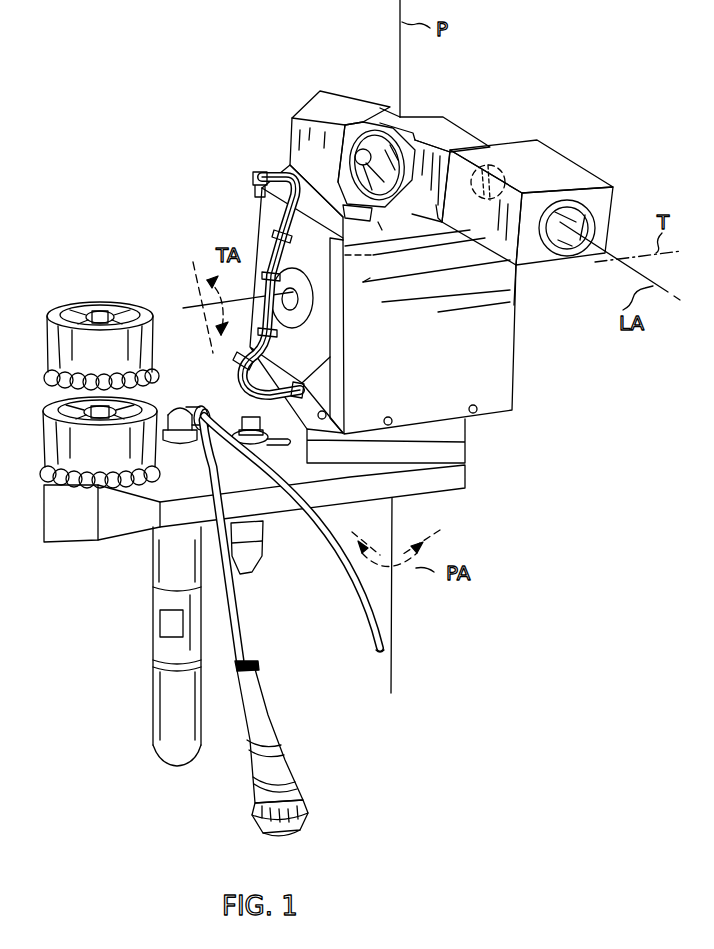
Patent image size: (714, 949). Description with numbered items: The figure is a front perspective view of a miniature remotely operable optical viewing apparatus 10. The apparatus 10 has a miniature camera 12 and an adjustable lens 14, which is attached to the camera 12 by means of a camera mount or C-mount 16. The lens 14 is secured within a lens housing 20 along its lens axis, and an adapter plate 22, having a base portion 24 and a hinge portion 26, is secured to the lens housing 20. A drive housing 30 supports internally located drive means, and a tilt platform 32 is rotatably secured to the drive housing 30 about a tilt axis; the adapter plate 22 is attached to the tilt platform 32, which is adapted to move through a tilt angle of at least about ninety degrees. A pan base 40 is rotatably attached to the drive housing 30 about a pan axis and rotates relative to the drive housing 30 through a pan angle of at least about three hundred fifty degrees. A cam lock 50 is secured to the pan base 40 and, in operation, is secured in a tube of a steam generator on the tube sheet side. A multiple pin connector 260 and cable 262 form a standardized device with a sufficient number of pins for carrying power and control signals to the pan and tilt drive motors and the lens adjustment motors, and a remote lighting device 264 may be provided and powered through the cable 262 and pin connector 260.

The optical viewing apparatus 10 is at (456, 99).
The miniature camera 12 is at (463, 135).
The adjustable lens 14 is at (577, 226).
The camera mount 16 is at (513, 164).
The lens housing 20 is at (555, 168).
The adapter plate 22 is at (382, 230).
The base portion 24 is at (364, 283).
The hinge portion 26 is at (438, 218).
The drive housing 30 is at (512, 374).
The tilt platform 32 is at (260, 240).
The pan base 40 is at (466, 436).
The cam lock 50 is at (74, 542).
The multiple pin connector 260 is at (301, 747).
The cable 262 is at (255, 633).
The remote lighting device 264 is at (334, 100).